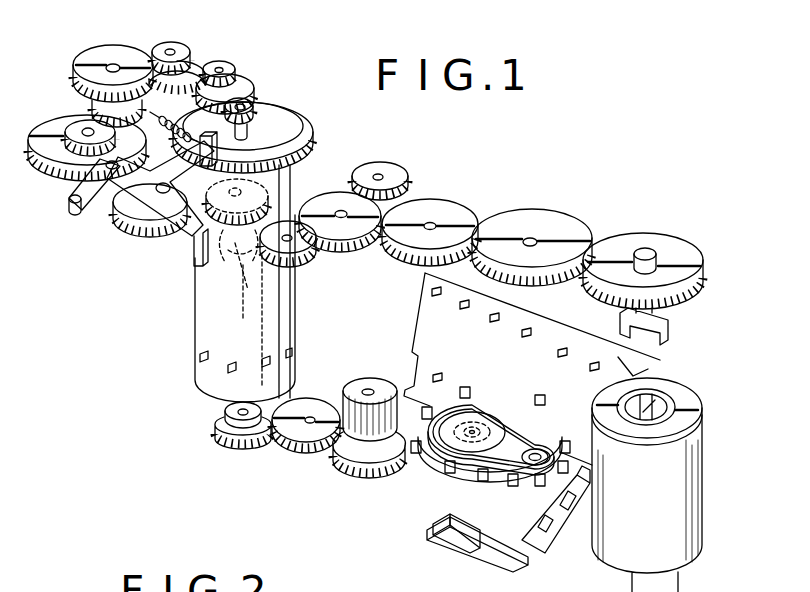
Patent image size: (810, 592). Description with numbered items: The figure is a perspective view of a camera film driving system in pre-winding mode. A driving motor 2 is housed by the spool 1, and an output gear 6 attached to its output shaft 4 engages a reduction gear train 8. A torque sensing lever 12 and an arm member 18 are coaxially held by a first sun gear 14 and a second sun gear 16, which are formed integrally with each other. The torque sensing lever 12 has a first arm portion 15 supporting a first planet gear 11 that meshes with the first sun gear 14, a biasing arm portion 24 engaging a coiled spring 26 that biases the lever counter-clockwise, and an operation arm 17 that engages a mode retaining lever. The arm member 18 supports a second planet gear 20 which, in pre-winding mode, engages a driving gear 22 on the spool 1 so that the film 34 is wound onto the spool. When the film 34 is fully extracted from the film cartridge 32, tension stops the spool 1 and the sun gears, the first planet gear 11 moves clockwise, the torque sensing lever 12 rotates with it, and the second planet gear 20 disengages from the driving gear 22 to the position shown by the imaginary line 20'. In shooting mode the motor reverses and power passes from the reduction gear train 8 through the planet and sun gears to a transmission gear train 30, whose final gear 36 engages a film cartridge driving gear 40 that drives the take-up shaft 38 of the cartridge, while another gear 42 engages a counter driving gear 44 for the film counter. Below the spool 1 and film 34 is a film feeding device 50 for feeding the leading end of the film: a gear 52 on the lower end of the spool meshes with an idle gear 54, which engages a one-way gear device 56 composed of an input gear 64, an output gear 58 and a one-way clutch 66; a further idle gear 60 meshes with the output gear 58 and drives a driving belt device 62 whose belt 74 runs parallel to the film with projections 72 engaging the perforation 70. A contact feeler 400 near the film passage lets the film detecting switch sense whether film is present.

The spool 1 is at (290, 320).
The driving motor 2 is at (264, 127).
The output shaft 4 is at (252, 113).
The output gear 6 is at (255, 100).
The reduction gear train 8 is at (146, 42).
The first planet gear 11 is at (63, 181).
The torque sensing lever 12 is at (126, 185).
The first sun gear 14 is at (147, 232).
The first arm portion 15 is at (120, 172).
The second sun gear 16 is at (137, 217).
The operation arm 17 is at (193, 250).
The arm member 18 is at (260, 200).
The second planet gear 20 is at (232, 266).
The imaginary line position of second planet gear 20' is at (257, 281).
The driving gear 22 is at (311, 147).
The biasing arm portion 24 is at (310, 153).
The coiled spring 26 is at (84, 150).
The transmission gear train 30 is at (549, 240).
The film cartridge 32 is at (628, 469).
The film 34 is at (532, 369).
The final gear 36 is at (568, 237).
The take-up shaft 38 is at (661, 400).
The film cartridge driving gear 40 is at (670, 291).
The gear 42 is at (350, 236).
The counter driving gear 44 is at (400, 183).
The film feeding device 50 is at (356, 440).
The gear 52 is at (237, 457).
The idle gear 54 is at (290, 453).
The one-way gear device 56 is at (356, 490).
The output gear 58 is at (361, 385).
The idle gear 60 is at (414, 452).
The driving belt device 62 is at (471, 500).
The input gear 64 is at (342, 470).
The one-way clutch 66 is at (355, 497).
The perforation 70 is at (440, 374).
The projections 72 is at (515, 490).
The belt 74 is at (498, 482).
The contact feeler 400 is at (596, 508).